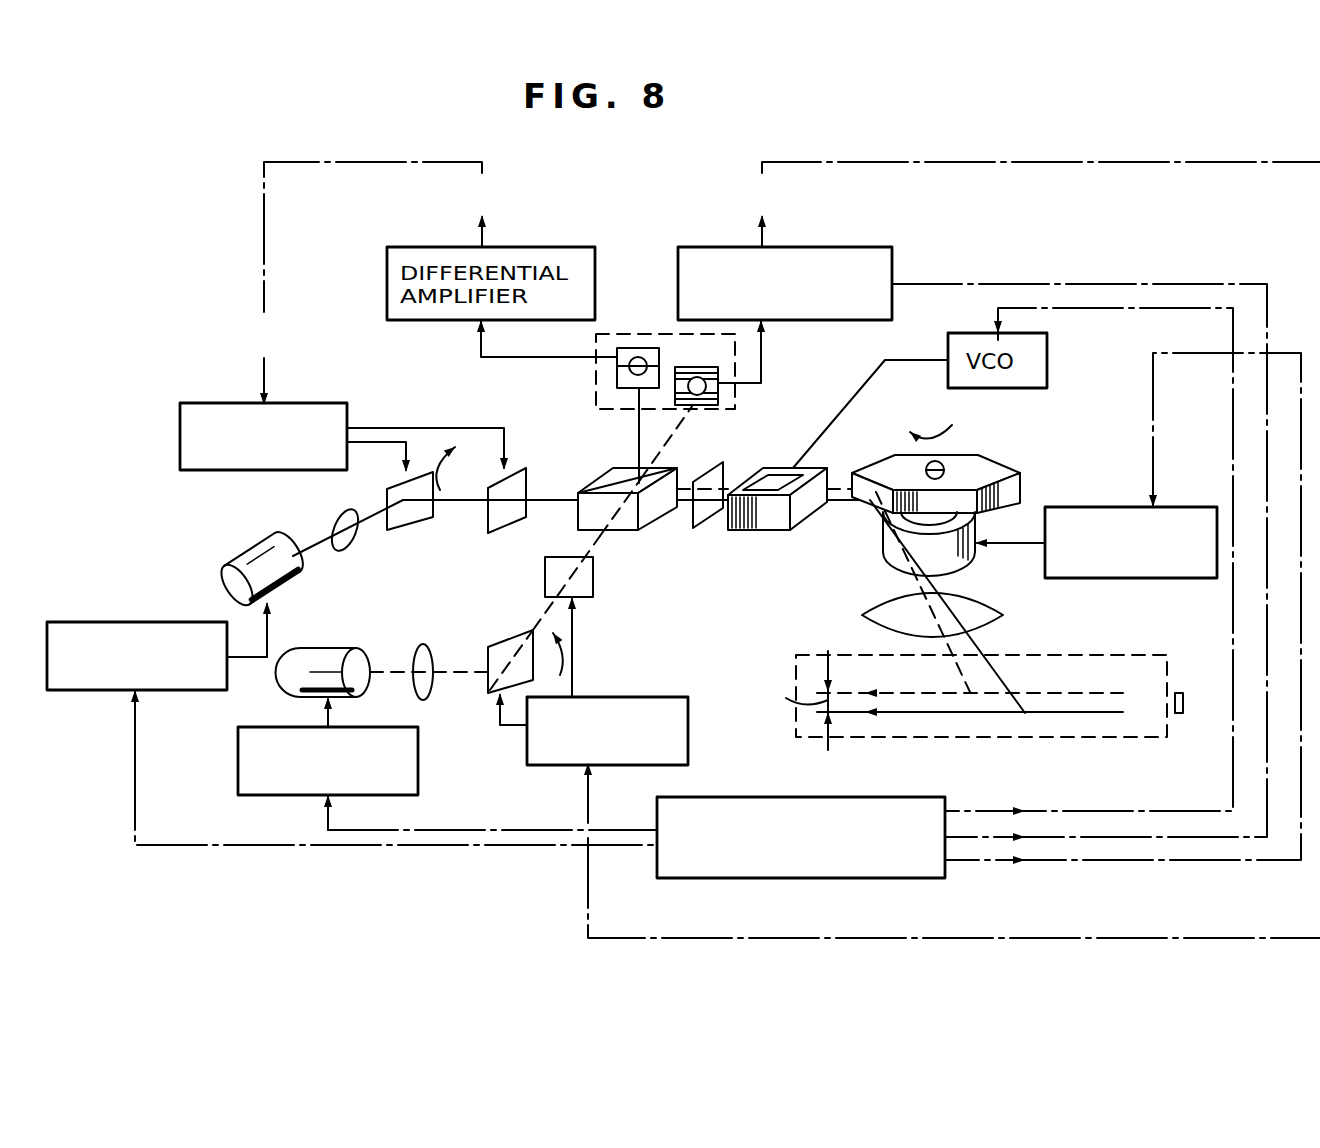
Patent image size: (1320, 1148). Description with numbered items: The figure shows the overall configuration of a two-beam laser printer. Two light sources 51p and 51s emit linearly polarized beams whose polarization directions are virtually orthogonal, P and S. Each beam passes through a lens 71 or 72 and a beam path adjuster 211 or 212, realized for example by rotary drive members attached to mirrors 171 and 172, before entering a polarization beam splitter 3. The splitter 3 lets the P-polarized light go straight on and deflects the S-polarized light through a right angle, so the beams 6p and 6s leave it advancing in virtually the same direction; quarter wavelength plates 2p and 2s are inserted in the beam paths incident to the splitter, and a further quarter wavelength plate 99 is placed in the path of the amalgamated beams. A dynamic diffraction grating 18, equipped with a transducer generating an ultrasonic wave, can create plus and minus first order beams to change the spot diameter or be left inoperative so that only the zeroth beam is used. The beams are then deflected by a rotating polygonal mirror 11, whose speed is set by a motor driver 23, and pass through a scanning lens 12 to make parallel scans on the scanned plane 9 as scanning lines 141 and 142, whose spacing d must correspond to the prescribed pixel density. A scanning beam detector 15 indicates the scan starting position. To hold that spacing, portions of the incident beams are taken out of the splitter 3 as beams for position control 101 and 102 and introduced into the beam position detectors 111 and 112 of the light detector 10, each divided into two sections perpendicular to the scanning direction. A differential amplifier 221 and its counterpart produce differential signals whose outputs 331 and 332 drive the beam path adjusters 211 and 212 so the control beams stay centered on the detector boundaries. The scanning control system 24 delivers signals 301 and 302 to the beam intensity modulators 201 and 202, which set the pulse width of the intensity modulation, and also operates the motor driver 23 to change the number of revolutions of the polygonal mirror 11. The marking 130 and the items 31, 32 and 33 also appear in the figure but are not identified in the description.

The output of differential amplifier 332 is at (375, 283).
The output of differential amplifier 331 is at (940, 550).
The differential amplifier 221 is at (875, 247).
The signal line to scanning control system 31 is at (1077, 284).
The VCO control line 33 is at (1085, 312).
The motor driver control line 32 is at (1157, 405).
The light detector 10 is at (596, 372).
The beam position detector 112 is at (647, 348).
The beam position detector 111 is at (718, 400).
The beam for position control 102 is at (639, 430).
The beam for position control 101 is at (683, 420).
The rotation direction of polygon mirror 130 is at (990, 390).
The rotational polygonal mirror motor driver 23 is at (1188, 507).
The beam path adjuster 212 is at (180, 428).
The quarter wavelength plate 2p is at (518, 470).
The P-polarized beam 6p is at (460, 505).
The mirror 171 is at (395, 533).
The lens 71 is at (330, 521).
The light source 51p is at (235, 562).
The polarization beam splitter 3 is at (660, 515).
The quarter wavelength plate 99 is at (707, 522).
The dynamic diffraction grating 18 is at (778, 533).
The rotating polygonal mirror 11 is at (1022, 478).
The scanning lens 12 is at (990, 607).
The scanned plane 9 is at (1038, 656).
The scanning line 141 is at (1109, 690).
The scanning line 142 is at (1093, 714).
The scanning beam detector 15 is at (1178, 693).
The beam intensity modulator 202 is at (92, 620).
The light source 51s is at (322, 648).
The lens 72 is at (435, 700).
The mirror 172 is at (490, 642).
The S-polarized beam 6s is at (596, 538).
The quarter wavelength plate 2s is at (593, 597).
The beam path adjuster 211 is at (662, 697).
The beam intensity modulator 201 is at (238, 750).
The signal 302 is at (133, 795).
The signal 301 is at (326, 825).
The scanning control system 24 is at (758, 797).